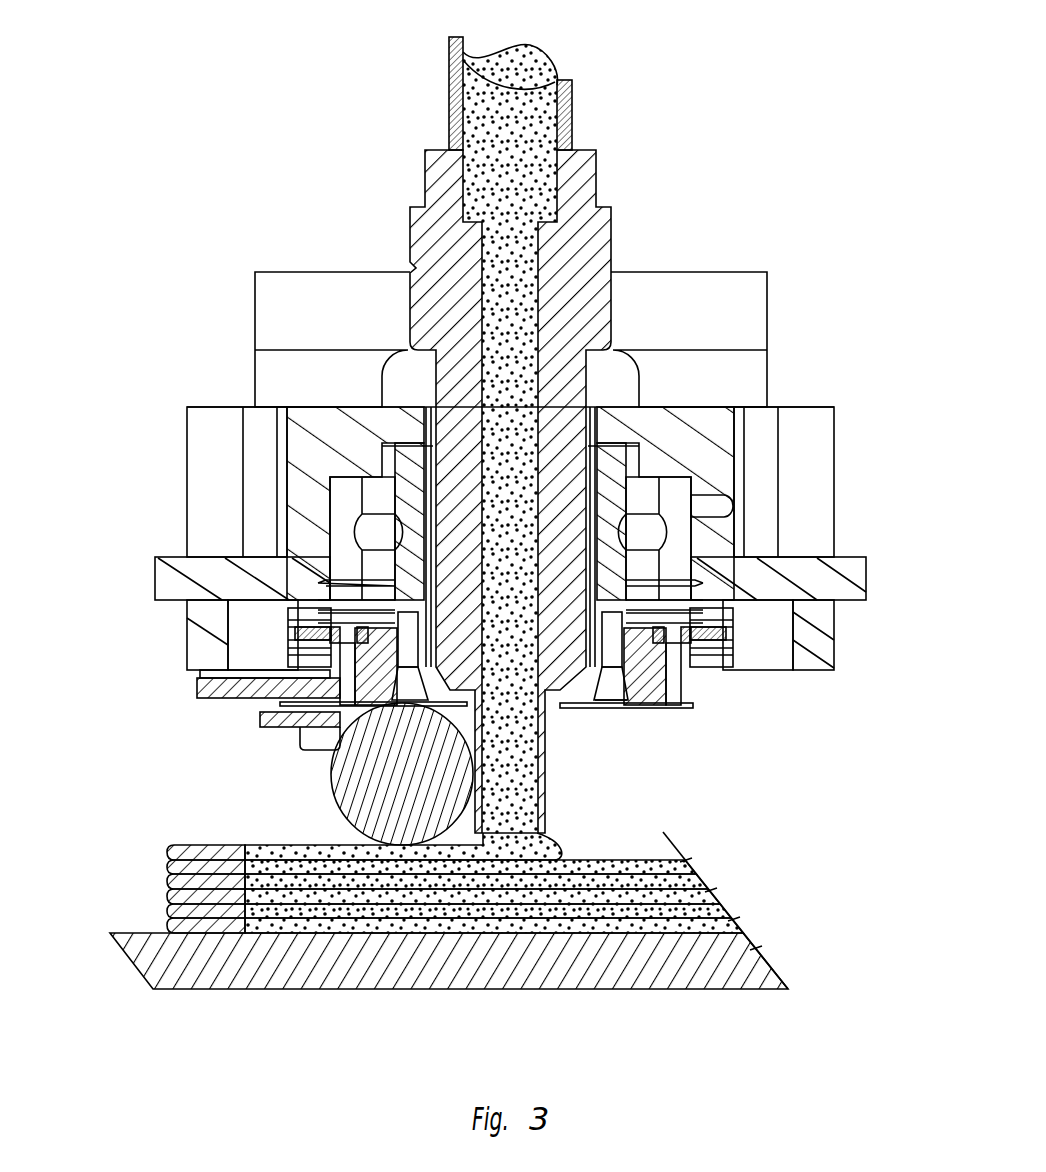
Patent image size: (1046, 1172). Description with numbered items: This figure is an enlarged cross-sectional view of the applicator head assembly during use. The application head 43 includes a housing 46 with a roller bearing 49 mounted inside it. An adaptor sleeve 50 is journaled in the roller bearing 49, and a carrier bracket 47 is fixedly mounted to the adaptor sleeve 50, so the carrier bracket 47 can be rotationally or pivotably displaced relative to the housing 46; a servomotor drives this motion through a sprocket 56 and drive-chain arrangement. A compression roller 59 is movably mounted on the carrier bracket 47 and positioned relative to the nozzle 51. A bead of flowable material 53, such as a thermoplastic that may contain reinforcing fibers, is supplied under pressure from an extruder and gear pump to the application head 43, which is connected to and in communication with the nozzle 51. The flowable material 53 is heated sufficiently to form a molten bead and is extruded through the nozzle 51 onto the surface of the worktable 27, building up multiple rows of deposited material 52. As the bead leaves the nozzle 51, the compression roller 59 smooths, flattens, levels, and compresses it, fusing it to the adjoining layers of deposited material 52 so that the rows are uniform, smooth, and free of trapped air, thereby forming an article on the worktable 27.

The worktable 27 is at (657, 990).
The application head 43 is at (853, 488).
The housing 46 is at (190, 476).
The carrier bracket 47 is at (185, 697).
The roller bearing 49 is at (676, 490).
The adaptor sleeve 50 is at (612, 565).
The nozzle 51 is at (425, 172).
The deposited material 52 is at (147, 885).
The flowable material 53 is at (540, 62).
The sprocket 56 is at (736, 630).
The compression roller 59 is at (337, 782).